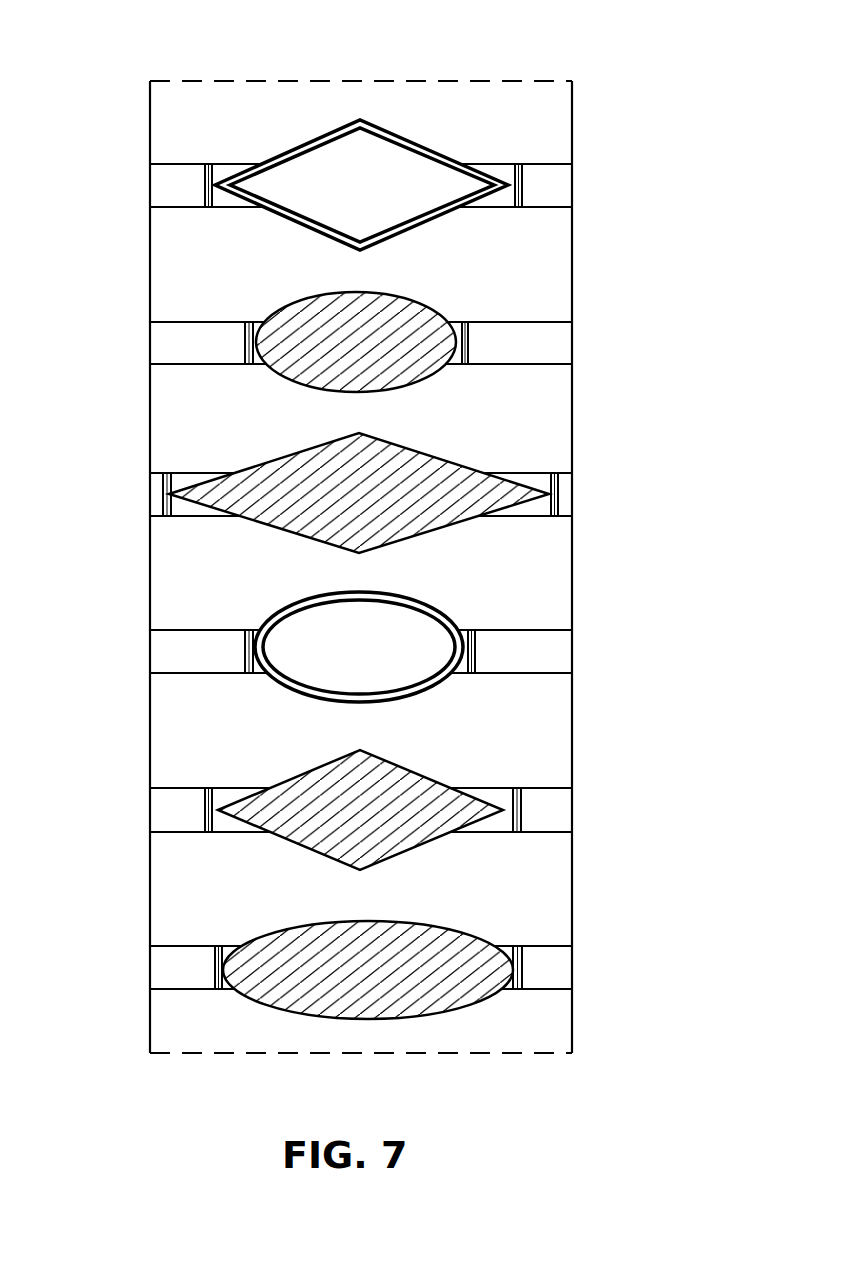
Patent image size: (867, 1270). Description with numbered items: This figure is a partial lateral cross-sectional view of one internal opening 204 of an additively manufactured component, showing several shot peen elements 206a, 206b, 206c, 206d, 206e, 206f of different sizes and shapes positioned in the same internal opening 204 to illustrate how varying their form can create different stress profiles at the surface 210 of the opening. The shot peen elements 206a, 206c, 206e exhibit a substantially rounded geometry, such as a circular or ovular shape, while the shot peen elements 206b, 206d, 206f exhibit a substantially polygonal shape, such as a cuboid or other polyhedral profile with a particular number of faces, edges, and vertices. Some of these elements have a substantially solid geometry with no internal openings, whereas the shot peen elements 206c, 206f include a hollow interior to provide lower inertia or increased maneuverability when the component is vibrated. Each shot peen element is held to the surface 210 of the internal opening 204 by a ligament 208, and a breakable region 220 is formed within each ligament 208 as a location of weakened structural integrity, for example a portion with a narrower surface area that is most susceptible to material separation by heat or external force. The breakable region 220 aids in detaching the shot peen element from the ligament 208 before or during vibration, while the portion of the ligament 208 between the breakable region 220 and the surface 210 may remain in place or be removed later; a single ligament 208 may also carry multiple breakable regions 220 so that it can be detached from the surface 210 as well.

The internal opening 204 is at (180, 268).
The shot peen element 206a is at (310, 953).
The shot peen element 206b is at (310, 790).
The shot peen element 206c is at (314, 606).
The shot peen element 206d is at (296, 463).
The shot peen element 206e is at (325, 310).
The shot peen element 206f is at (295, 143).
The ligament 208 is at (165, 184).
The surface 210 is at (149, 723).
The breakable region 220 is at (207, 163).